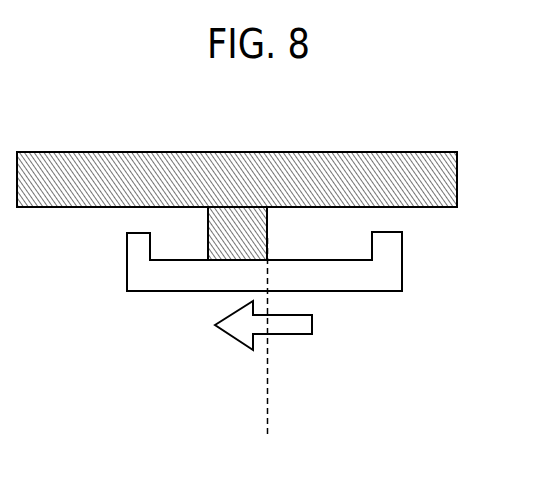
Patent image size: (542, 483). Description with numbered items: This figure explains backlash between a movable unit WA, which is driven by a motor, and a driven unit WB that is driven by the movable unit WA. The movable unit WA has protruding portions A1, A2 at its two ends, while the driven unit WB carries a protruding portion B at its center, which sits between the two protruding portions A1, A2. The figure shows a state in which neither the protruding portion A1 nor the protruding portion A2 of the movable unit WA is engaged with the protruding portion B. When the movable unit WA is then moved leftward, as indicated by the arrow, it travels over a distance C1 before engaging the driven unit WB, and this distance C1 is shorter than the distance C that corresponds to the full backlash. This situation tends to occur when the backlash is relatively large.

The driven unit WB is at (434, 172).
The protruding portion B is at (238, 223).
The movable unit WA is at (343, 277).
The protruding portion A1 is at (131, 247).
The protruding portion A2 is at (394, 247).
The distance C1 is at (372, 246).
The distance C is at (428, 428).